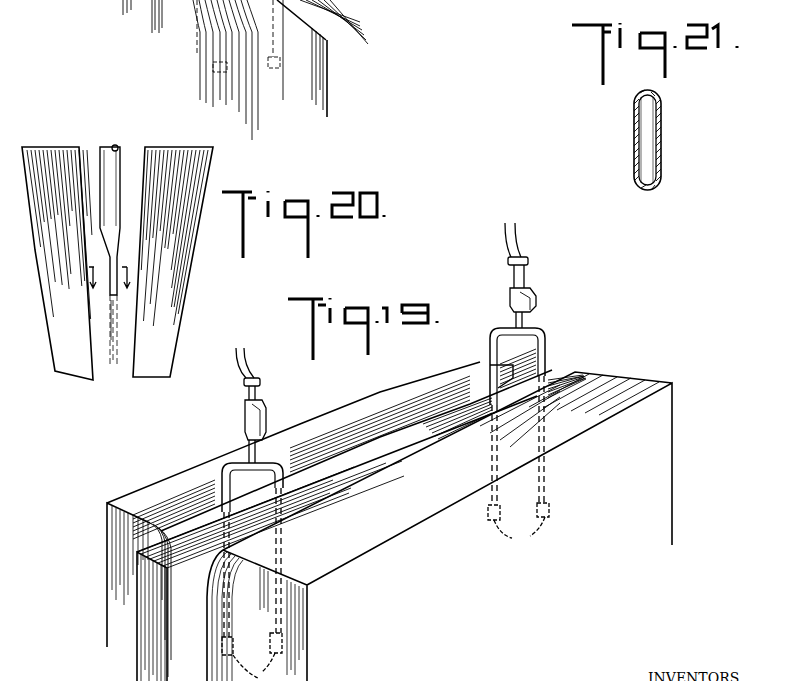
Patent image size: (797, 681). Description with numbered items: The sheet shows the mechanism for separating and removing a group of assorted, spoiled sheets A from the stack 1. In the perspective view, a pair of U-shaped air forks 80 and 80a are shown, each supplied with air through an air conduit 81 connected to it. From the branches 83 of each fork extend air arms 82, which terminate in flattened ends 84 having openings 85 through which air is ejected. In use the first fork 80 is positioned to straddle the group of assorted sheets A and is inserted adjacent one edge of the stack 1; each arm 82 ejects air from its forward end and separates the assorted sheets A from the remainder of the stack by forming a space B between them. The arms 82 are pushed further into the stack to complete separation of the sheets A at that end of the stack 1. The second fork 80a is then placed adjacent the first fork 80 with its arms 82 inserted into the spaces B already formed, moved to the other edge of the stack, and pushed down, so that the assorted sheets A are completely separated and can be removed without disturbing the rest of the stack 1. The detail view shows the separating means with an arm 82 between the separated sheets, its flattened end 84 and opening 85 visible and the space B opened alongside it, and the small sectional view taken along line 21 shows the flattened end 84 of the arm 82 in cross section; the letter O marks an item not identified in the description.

In FIG. 19, the stack 1 is at (642, 397).
In FIG. 20, the section line 21— 21 is at (112, 288).
In FIG. 19, the U-shaped air fork 80 is at (270, 462).
In FIG. 19, the second U-shaped air fork 80a is at (552, 325).
In FIG. 19, the air conduit 81 is at (247, 363).
In FIG. 21, the air arm 82 is at (674, 131).
In FIG. 19, the air arm 82 is at (222, 503).
In FIG. 20, the branch 83 is at (110, 168).
In FIG. 19, the branch 83 is at (225, 462).
In FIG. 21, the flattened end 84 is at (636, 115).
In FIG. 20, the flattened end 84 is at (112, 265).
In FIG. 19, the flattened end 84 is at (280, 58).
In FIG. 20, the opening 85 is at (110, 295).
In FIG. 19, the opening 85 is at (508, 535).
In FIG. 19, the group of assorted sheets A is at (150, 590).
In FIG. 20, the space B is at (85, 157).
In FIG. 19, the space B is at (412, 413).
In FIG. 20, the opening O is at (195, 178).